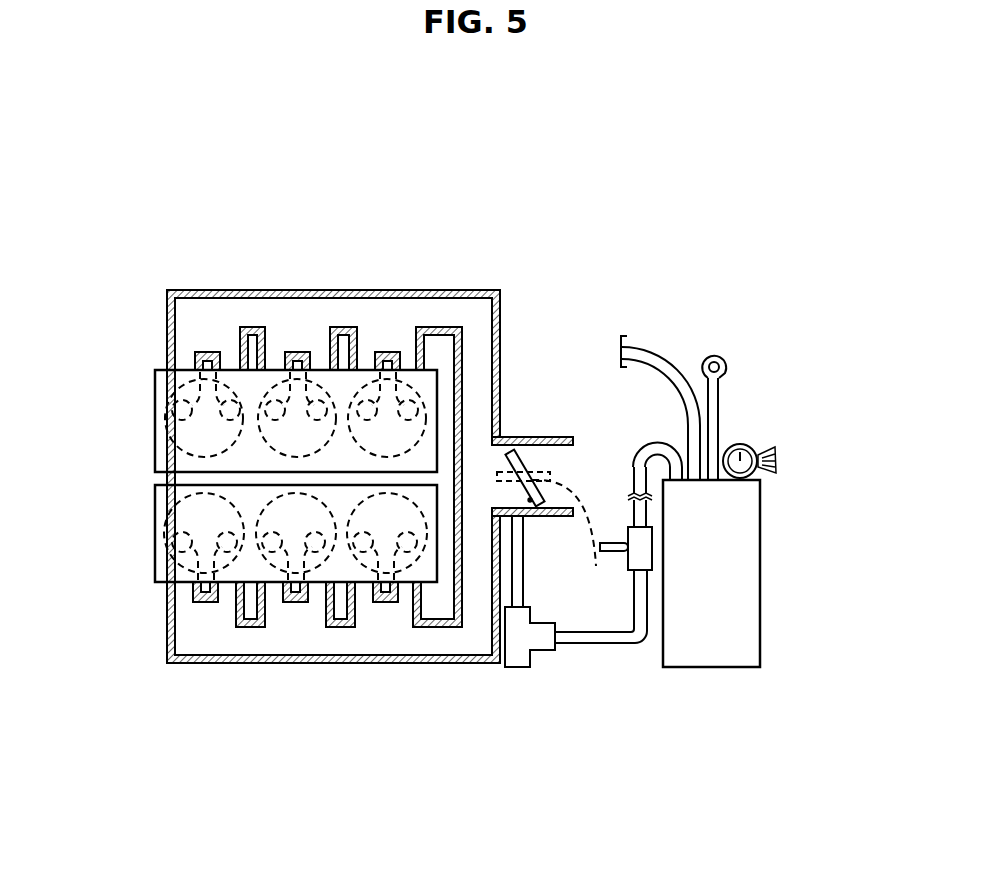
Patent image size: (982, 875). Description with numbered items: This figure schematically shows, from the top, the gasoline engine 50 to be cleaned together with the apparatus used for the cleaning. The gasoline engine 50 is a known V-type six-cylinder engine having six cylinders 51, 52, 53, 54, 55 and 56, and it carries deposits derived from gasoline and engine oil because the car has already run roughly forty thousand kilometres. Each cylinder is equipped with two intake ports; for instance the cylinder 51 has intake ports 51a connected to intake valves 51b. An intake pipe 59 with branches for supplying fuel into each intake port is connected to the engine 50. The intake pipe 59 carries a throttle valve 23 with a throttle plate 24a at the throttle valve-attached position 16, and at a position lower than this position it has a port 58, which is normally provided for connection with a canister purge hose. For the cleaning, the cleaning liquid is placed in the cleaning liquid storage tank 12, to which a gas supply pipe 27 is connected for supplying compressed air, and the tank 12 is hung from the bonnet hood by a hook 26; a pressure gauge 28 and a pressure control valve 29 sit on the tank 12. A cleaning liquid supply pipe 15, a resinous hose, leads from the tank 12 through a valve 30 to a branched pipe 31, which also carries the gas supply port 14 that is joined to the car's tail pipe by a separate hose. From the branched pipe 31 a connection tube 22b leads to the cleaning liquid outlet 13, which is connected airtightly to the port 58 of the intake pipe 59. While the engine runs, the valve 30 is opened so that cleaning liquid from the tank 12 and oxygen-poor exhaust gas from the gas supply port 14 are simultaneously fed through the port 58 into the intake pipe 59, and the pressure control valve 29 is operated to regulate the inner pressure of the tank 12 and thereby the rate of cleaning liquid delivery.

The cleaning liquid storage tank 12 is at (745, 570).
The cleaning liquid outlet 13 is at (518, 516).
The gas supply port 14 is at (517, 668).
The cleaning liquid supply pipe 15 is at (633, 656).
The throttle valve-attached position 16 is at (571, 542).
The connection tube 22b is at (520, 572).
The throttle valve 23 is at (520, 428).
The throttle plate 24a is at (520, 460).
The hook 26 is at (719, 359).
The gas supply pipe 27 is at (649, 345).
The pressure gauge 28 is at (746, 446).
The pressure control valve 29 is at (778, 460).
The valve 30 is at (627, 528).
The branched pipe 31 is at (533, 638).
The gasoline engine 50 is at (141, 477).
The cylinder 51 is at (208, 352).
The intake port 51a is at (172, 368).
The intake valve 51b is at (178, 428).
The cylinder 52 is at (205, 604).
The cylinder 53 is at (297, 352).
The cylinder 54 is at (295, 604).
The cylinder 55 is at (390, 352).
The cylinder 56 is at (388, 604).
The port 58 is at (542, 502).
The intake pipe 59 is at (502, 331).